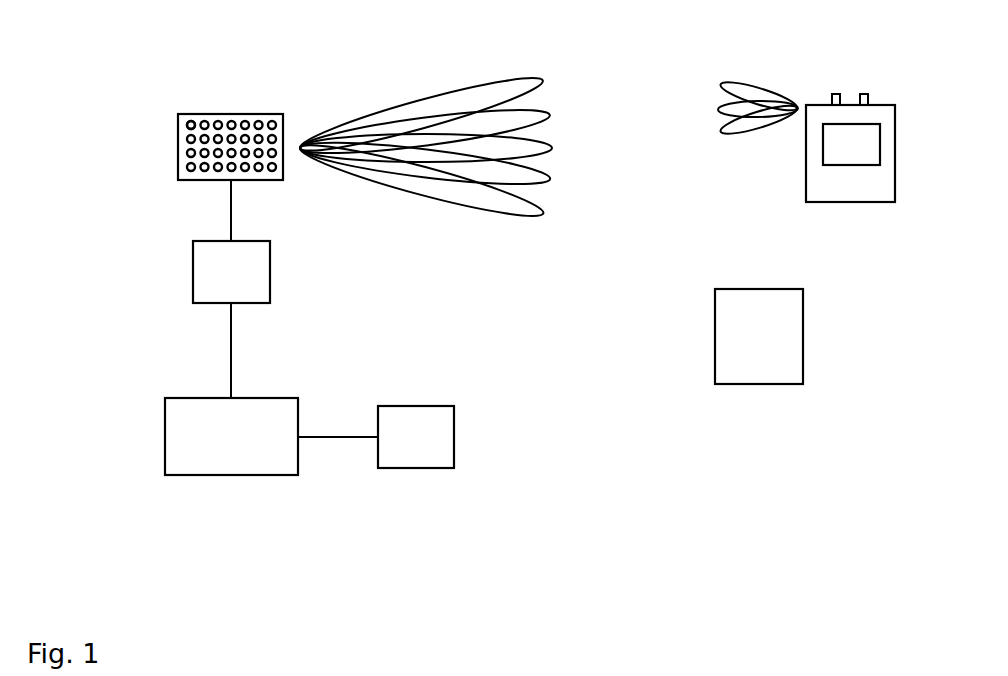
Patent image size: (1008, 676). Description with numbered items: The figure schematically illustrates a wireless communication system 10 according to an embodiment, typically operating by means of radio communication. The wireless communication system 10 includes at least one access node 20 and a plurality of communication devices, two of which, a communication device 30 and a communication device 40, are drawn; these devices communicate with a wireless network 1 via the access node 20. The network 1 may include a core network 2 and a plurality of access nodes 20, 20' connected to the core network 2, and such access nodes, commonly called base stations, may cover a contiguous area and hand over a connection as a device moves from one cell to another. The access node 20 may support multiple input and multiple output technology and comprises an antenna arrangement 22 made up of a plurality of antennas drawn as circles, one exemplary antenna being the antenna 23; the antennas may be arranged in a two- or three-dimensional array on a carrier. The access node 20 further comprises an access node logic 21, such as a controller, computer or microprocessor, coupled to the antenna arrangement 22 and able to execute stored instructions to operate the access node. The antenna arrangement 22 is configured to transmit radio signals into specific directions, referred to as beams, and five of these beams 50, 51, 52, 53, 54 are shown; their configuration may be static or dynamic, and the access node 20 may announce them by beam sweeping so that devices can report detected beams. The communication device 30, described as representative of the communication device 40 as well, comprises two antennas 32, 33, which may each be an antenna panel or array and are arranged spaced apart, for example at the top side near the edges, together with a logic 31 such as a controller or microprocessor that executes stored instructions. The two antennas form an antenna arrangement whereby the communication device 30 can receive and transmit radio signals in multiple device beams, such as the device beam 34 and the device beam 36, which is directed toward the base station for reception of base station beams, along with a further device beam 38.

The wireless network 1 is at (264, 506).
The core network 2 is at (216, 452).
The wireless communication system 10 is at (642, 515).
The access node 20 is at (179, 182).
The access node 20' is at (416, 437).
The access node logic 21 is at (218, 290).
The antenna arrangement 22 is at (177, 175).
The antenna 23 is at (186, 127).
The communication device 30 is at (862, 205).
The logic 31 is at (838, 155).
The antenna 32 is at (833, 88).
The antenna 33 is at (863, 83).
The device beam 34 is at (732, 80).
The device beam 36 is at (722, 103).
The third receive beam 38 is at (738, 143).
The communication device 40 is at (773, 387).
The beam 50 is at (515, 72).
The beam 51 is at (542, 103).
The beam 52 is at (542, 160).
The beam 53 is at (537, 190).
The beam 54 is at (518, 225).